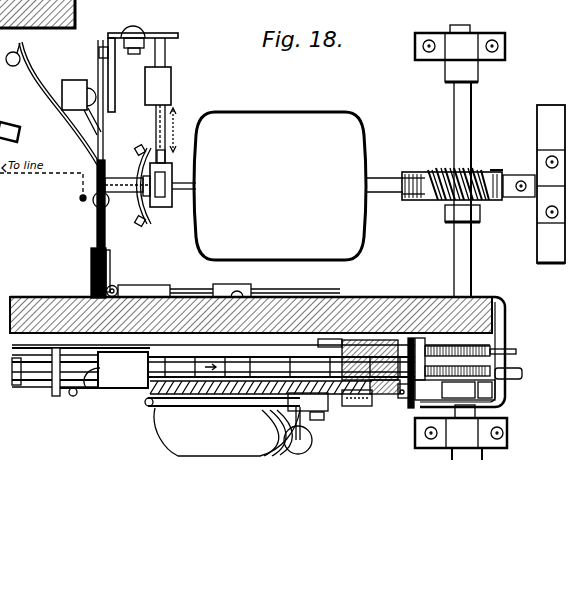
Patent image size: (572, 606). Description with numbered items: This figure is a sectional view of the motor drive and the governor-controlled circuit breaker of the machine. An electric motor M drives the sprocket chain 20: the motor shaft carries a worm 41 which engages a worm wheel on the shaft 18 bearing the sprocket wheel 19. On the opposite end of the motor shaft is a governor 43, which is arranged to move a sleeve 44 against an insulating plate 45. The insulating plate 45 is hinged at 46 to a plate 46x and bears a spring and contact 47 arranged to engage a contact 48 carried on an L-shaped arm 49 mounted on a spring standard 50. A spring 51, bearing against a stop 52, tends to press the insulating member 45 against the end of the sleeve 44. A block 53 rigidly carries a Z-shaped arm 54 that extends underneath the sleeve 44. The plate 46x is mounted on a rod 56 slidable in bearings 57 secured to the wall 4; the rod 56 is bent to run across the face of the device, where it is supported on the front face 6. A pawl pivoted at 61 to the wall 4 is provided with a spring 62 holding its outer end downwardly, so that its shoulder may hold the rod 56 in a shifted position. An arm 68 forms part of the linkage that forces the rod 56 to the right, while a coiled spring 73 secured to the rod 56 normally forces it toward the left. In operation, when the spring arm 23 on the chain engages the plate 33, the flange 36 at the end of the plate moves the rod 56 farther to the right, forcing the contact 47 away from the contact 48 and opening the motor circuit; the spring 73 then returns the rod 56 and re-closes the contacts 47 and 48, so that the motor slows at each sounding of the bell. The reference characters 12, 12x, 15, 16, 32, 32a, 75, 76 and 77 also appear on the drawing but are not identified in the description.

The wall 4 is at (45, 303).
The front face 6 is at (208, 406).
The frame casing 12 is at (502, 310).
The spring rod 12x is at (505, 352).
The clutch member 15 is at (170, 200).
The clutch sleeve 16 is at (170, 160).
The shaft 18 is at (472, 272).
The sprocket wheel 19 is at (512, 380).
The sprocket chain 20 is at (27, 375).
The spring arm 23 is at (56, 388).
The drum 32 is at (227, 432).
The roller 32a is at (313, 431).
The plate 33 is at (250, 396).
The flange 36 is at (374, 406).
The worm 41 is at (466, 160).
The governor 43 is at (144, 226).
The sleeve 44 is at (126, 182).
The insulating plate 45 is at (104, 232).
The hinge 46 is at (115, 287).
The plate 46x is at (152, 295).
The spring and contact 47 is at (98, 62).
The contact 48 is at (104, 47).
The L-shaped arm 49 is at (156, 35).
The spring standard 50 is at (136, 27).
The spring 51 is at (74, 126).
The stop 52 is at (10, 64).
The block 53 is at (66, 82).
The Z-shaped arm 54 is at (20, 150).
The rod 56 is at (358, 300).
The bearings 57 is at (240, 290).
The pivot 61 is at (410, 408).
The spring 62 is at (455, 390).
The arm 68 is at (330, 340).
The coiled spring 73 is at (493, 337).
The clutch housing 75 is at (163, 207).
The pin 76 is at (166, 163).
The solenoid 77 is at (165, 64).
The electric motor M is at (280, 186).